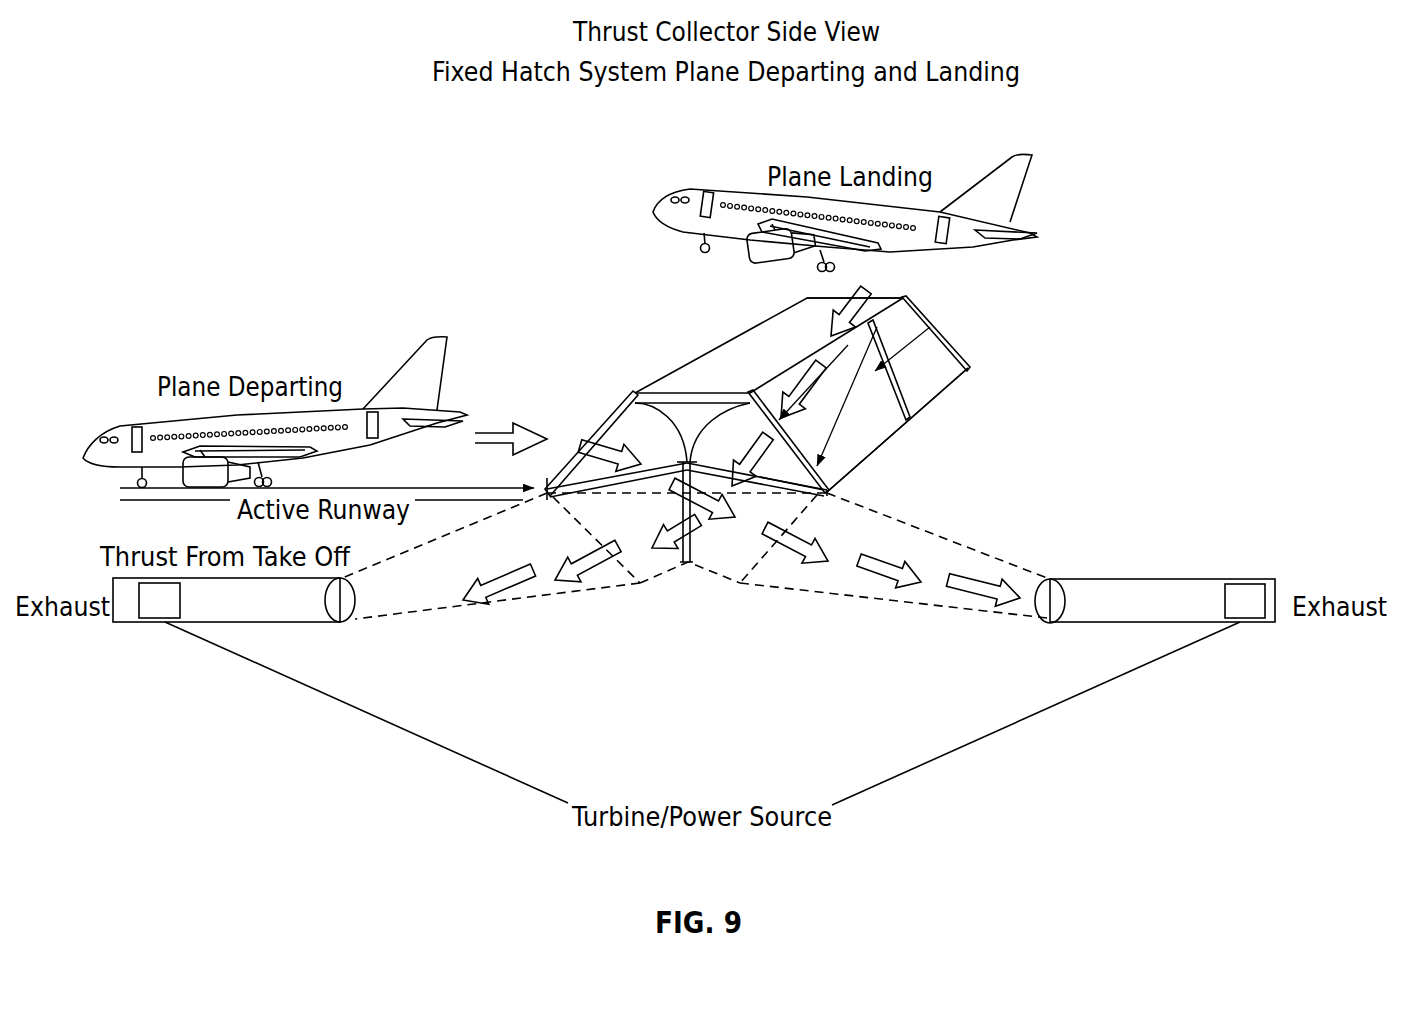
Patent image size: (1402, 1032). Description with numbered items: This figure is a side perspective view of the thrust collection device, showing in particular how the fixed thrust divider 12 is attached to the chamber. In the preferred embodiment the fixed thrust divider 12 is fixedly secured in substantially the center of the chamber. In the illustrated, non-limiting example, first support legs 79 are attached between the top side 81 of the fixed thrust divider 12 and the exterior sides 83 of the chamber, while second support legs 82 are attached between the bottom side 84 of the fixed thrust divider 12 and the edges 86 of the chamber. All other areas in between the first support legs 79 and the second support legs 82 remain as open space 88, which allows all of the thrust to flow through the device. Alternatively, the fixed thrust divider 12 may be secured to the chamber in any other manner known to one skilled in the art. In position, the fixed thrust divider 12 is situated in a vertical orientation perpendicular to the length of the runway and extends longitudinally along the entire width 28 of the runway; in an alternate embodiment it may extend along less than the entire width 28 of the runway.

The fixed thrust divider 12 is at (627, 378).
The width of the runway 28 is at (952, 395).
The first support legs 79 is at (915, 325).
The top side of the fixed thrust divider 81 is at (908, 292).
The second support legs 82 is at (758, 492).
The exterior sides of the chamber 83 is at (943, 397).
The bottom side of the fixed thrust divider 84 is at (833, 387).
The edges of the chamber 86 is at (835, 492).
The open space 88 is at (893, 440).